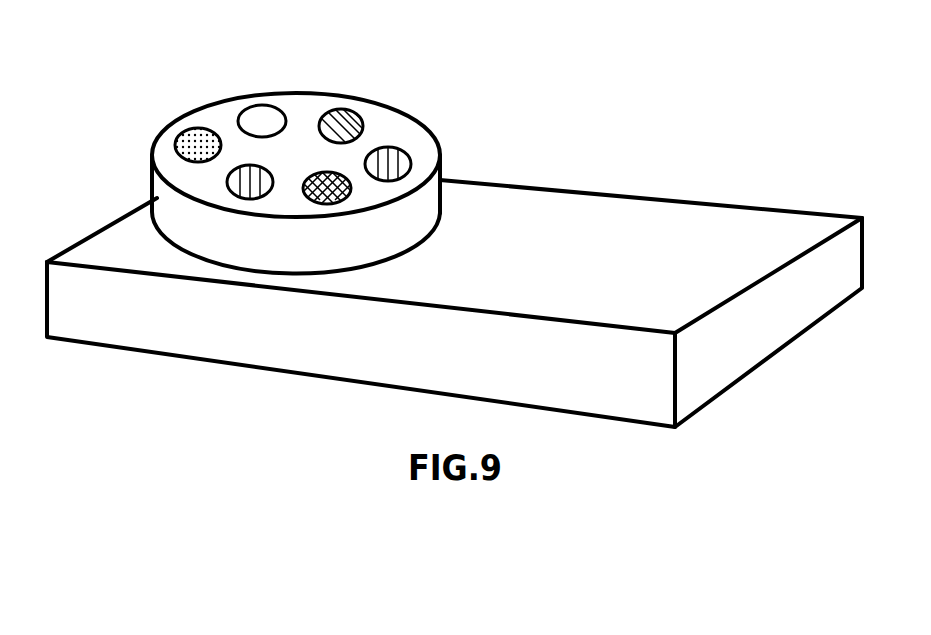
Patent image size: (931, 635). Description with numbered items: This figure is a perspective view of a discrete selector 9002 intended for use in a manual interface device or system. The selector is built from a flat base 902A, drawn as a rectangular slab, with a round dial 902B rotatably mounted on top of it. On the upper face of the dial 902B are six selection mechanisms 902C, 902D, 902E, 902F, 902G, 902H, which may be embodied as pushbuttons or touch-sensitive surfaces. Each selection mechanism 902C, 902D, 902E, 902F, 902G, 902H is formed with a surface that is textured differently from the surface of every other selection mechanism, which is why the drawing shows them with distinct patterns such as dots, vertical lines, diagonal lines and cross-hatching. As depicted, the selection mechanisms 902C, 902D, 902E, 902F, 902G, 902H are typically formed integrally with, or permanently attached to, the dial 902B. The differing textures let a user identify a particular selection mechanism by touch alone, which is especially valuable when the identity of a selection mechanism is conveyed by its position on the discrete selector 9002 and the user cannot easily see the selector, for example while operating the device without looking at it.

The base 902A is at (690, 276).
The dial 902B is at (233, 228).
The selection mechanism 902C is at (157, 170).
The selection mechanism 902D is at (177, 137).
The selection mechanism 902E is at (250, 104).
The selection mechanism 902F is at (313, 173).
The selection mechanism 902G is at (363, 122).
The selection mechanism 902H is at (411, 162).
The sample carrier assembly 9002 is at (592, 112).